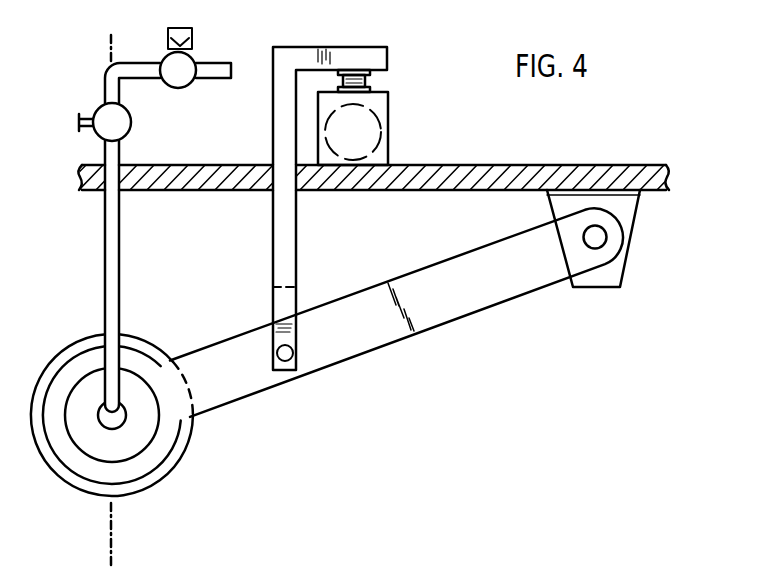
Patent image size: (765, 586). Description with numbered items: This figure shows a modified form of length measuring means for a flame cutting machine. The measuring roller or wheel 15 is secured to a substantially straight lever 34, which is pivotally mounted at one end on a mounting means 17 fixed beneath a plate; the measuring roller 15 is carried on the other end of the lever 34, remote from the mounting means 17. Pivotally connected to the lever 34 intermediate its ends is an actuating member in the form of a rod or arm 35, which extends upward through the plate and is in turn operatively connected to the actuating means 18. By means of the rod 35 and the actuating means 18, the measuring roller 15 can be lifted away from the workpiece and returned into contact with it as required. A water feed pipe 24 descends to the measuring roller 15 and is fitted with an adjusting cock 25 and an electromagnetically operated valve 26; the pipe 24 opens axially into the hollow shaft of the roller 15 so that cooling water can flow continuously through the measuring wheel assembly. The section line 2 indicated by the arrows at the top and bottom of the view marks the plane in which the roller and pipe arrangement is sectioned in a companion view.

The section line 2- 2 is at (63, 22).
The measuring roller 15 is at (176, 455).
The mounting means 17 is at (630, 224).
The actuating means 18 is at (371, 118).
The water feed pipe 24 is at (104, 246).
The adjusting cock 25 is at (132, 122).
The electromagnetically operated valve 26 is at (196, 60).
The lever 34 is at (365, 343).
The rod 35 is at (291, 250).